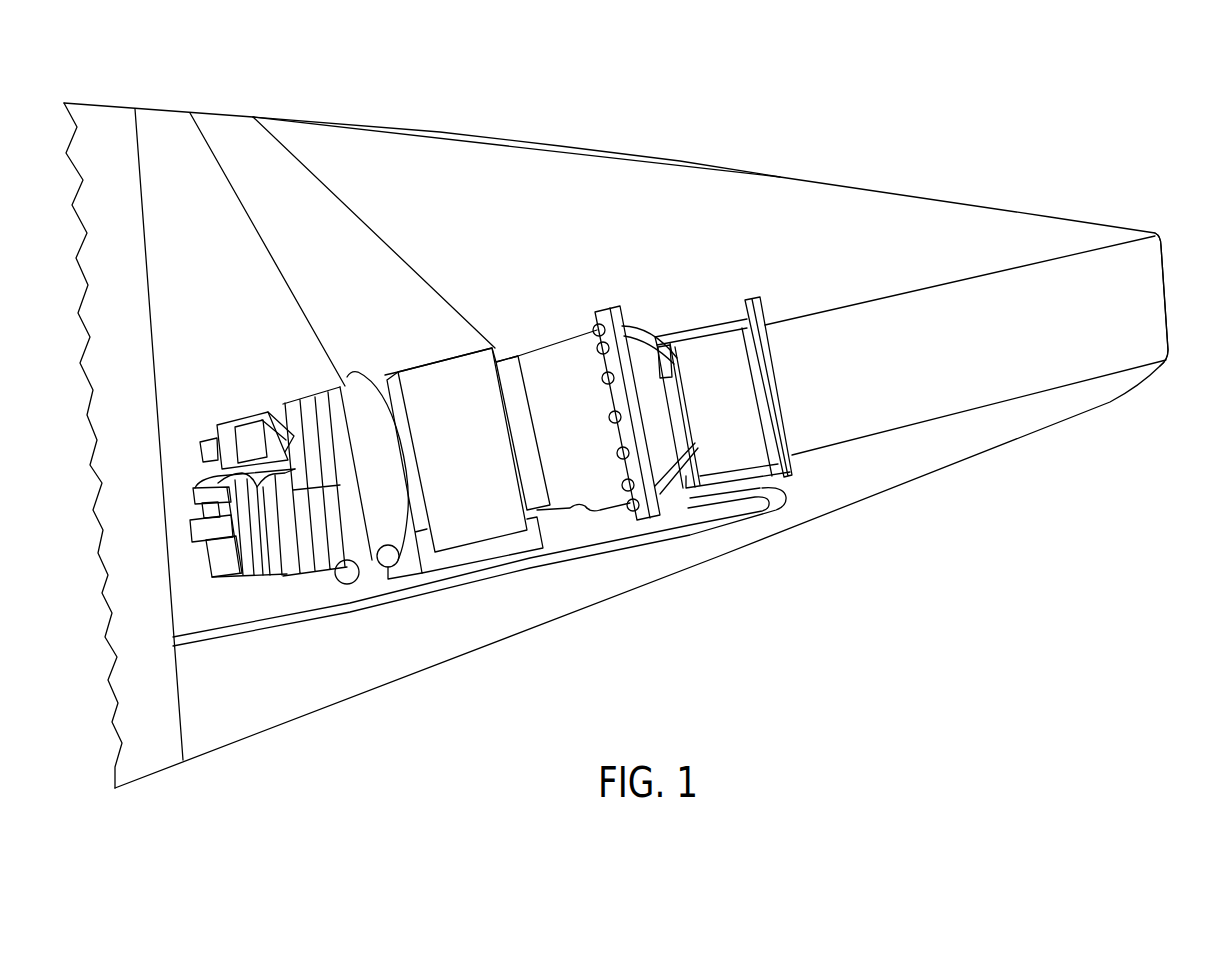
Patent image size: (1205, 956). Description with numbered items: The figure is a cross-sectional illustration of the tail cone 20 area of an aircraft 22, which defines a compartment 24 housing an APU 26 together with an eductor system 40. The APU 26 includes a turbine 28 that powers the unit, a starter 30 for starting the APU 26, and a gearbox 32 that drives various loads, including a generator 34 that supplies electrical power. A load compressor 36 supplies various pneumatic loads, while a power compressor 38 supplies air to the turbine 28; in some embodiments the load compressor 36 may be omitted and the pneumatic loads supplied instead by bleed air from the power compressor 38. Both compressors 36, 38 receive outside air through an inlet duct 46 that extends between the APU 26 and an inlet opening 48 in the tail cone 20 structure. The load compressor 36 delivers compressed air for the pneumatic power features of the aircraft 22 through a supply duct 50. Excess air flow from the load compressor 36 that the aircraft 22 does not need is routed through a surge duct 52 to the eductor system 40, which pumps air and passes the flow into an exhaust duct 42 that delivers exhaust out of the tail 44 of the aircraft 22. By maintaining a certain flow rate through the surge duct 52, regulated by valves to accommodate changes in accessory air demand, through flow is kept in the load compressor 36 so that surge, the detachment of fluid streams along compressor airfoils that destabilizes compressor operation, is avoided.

The tail cone 20 is at (948, 200).
The aircraft 22 is at (107, 103).
The compartment 24 is at (787, 207).
The APU 26 is at (531, 375).
The turbine 28 is at (575, 332).
The starter 30 is at (243, 430).
The gearbox 32 is at (267, 573).
The generator 34 is at (245, 573).
The load compressor 36 is at (347, 377).
The power compressor 38 is at (523, 490).
The eductor system 40 is at (723, 358).
The exhaust duct 42 is at (988, 407).
The tail 44 is at (1153, 232).
The inlet duct 46 is at (374, 234).
The inlet opening 48 is at (200, 119).
The supply duct 50 is at (350, 605).
The surge duct 52 is at (503, 573).